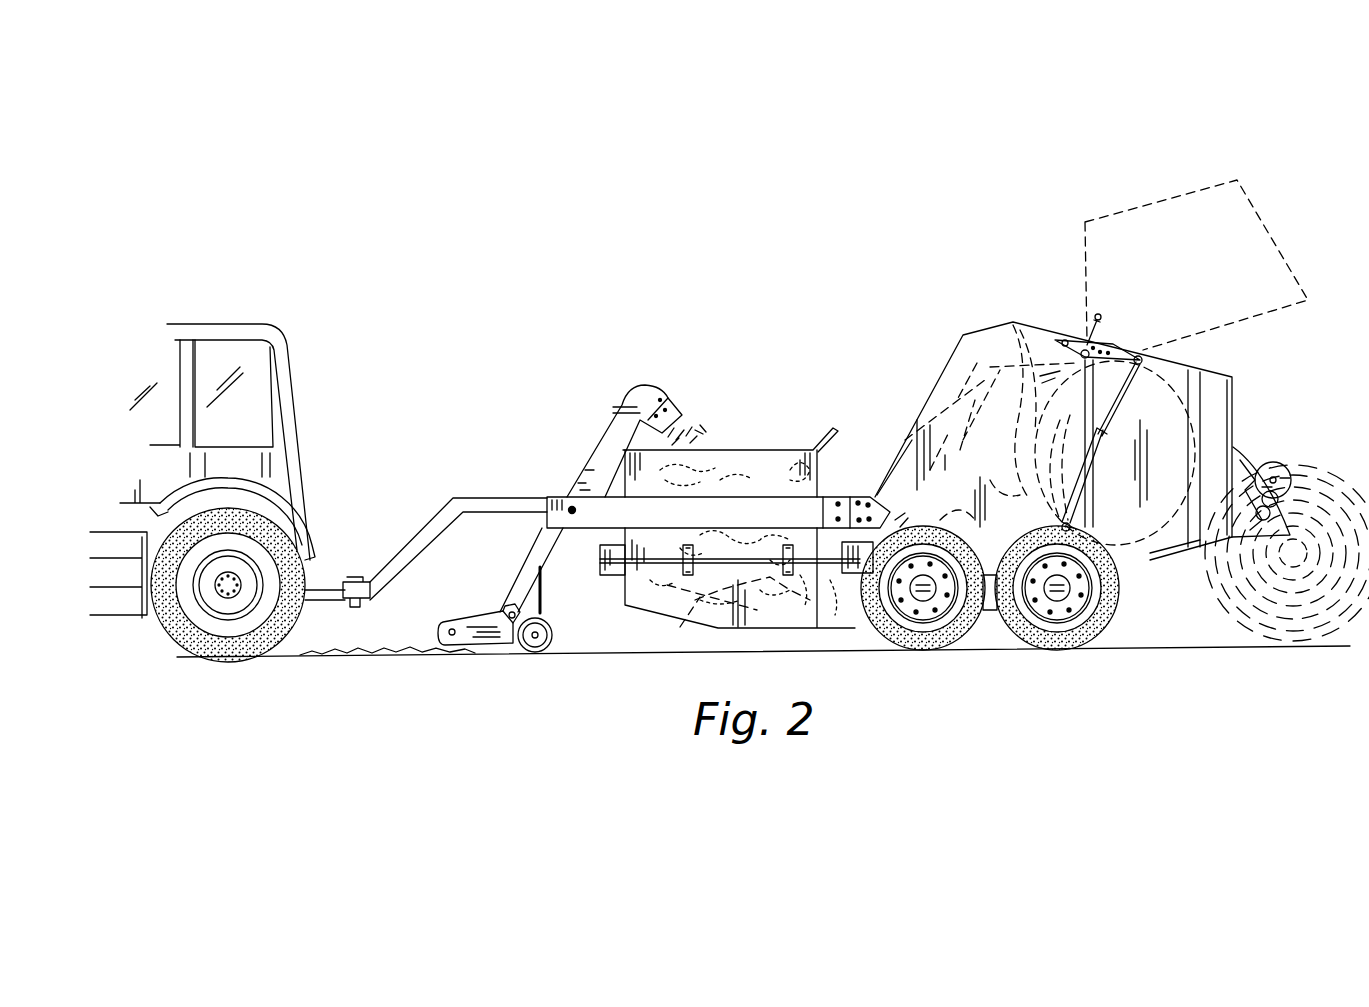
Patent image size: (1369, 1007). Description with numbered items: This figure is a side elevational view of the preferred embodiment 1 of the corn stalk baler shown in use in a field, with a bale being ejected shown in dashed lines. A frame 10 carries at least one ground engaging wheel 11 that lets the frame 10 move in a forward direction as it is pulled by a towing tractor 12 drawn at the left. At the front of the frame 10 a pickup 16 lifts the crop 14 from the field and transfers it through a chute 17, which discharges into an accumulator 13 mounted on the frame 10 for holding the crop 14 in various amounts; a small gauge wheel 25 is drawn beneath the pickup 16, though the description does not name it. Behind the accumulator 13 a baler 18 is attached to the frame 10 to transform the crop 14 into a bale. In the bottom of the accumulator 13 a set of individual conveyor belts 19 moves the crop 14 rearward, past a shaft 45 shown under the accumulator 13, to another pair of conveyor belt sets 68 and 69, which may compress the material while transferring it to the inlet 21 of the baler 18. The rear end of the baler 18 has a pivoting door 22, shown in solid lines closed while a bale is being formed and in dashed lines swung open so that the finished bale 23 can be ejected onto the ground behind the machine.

The preferred embodiment 1 is at (680, 296).
The frame 10 is at (603, 517).
The ground engaging wheel 11 is at (923, 649).
The towing tractor 12 is at (277, 465).
The accumulator 13 is at (747, 452).
The crop 14 is at (698, 437).
The pickup 16 is at (478, 617).
The chute 17 is at (605, 435).
The baler 18 is at (988, 338).
The set of individual conveyor belts 19 is at (680, 628).
The inlet 21 is at (997, 537).
The pivoting door 22 is at (1242, 220).
The bale 23 is at (1308, 477).
The gauge wheel 25 is at (550, 653).
The shaft 45 is at (758, 556).
The conveyor belt set 68 is at (817, 520).
The conveyor belt set 69 is at (828, 494).